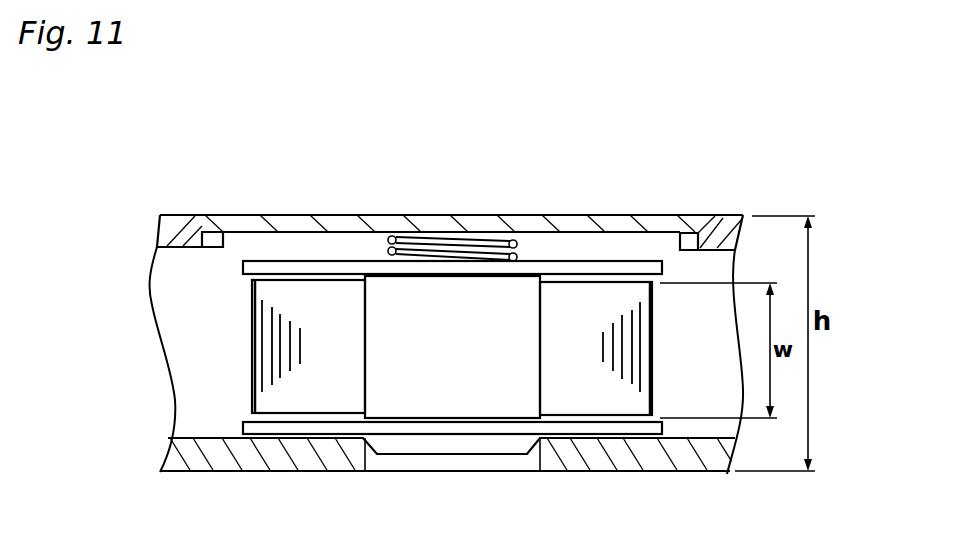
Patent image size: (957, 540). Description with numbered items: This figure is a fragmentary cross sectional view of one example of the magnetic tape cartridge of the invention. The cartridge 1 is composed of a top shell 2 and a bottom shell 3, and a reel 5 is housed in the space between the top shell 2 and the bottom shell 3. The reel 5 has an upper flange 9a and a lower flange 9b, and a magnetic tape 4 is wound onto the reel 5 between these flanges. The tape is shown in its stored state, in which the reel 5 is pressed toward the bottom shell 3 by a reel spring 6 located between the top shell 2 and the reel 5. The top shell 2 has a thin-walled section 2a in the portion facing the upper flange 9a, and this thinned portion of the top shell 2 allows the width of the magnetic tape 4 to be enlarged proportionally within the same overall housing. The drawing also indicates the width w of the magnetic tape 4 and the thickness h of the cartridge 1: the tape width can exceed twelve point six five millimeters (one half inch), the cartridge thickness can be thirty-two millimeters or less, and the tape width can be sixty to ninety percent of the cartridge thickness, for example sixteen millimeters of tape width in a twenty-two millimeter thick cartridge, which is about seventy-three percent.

The cartridge 1 is at (527, 180).
The top shell 2 is at (455, 201).
The thin-walled section 2a is at (568, 217).
The bottom shell 3 is at (695, 458).
The magnetic tape 4 is at (306, 398).
The reel 5 is at (413, 402).
The reel spring 6 is at (437, 240).
The upper flange 9a is at (605, 268).
The lower flange 9b is at (613, 428).